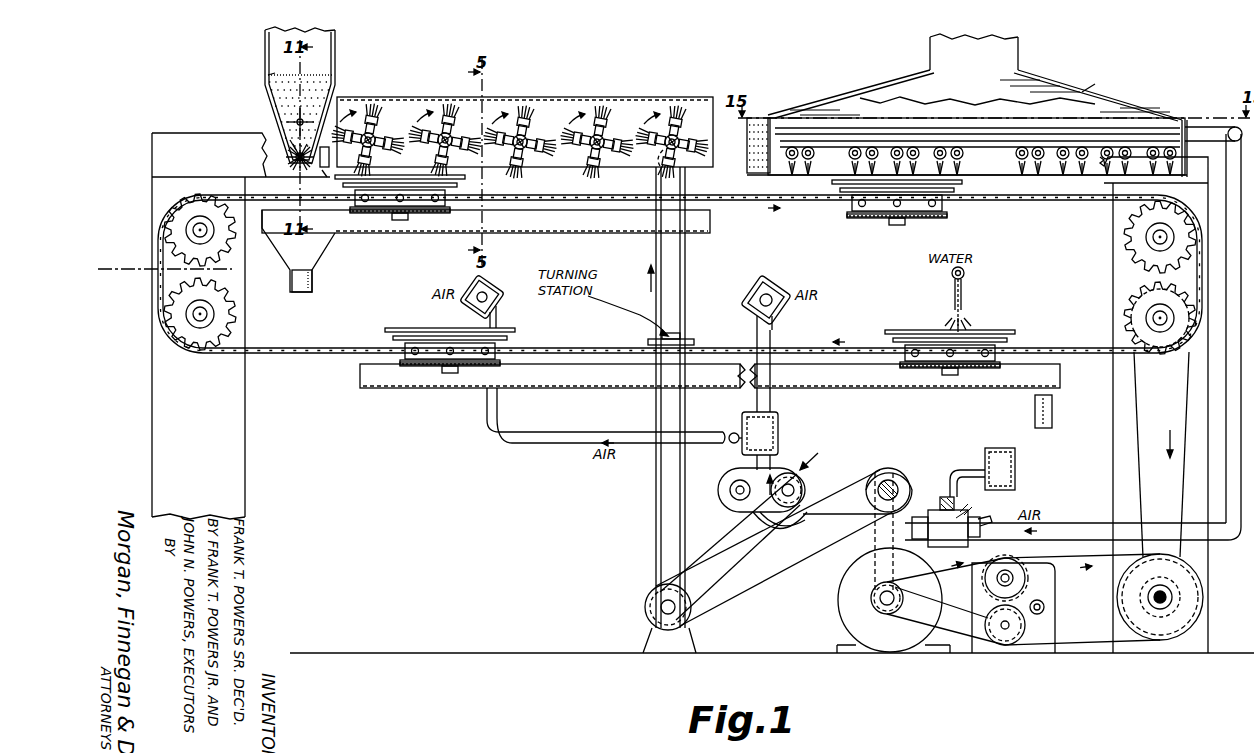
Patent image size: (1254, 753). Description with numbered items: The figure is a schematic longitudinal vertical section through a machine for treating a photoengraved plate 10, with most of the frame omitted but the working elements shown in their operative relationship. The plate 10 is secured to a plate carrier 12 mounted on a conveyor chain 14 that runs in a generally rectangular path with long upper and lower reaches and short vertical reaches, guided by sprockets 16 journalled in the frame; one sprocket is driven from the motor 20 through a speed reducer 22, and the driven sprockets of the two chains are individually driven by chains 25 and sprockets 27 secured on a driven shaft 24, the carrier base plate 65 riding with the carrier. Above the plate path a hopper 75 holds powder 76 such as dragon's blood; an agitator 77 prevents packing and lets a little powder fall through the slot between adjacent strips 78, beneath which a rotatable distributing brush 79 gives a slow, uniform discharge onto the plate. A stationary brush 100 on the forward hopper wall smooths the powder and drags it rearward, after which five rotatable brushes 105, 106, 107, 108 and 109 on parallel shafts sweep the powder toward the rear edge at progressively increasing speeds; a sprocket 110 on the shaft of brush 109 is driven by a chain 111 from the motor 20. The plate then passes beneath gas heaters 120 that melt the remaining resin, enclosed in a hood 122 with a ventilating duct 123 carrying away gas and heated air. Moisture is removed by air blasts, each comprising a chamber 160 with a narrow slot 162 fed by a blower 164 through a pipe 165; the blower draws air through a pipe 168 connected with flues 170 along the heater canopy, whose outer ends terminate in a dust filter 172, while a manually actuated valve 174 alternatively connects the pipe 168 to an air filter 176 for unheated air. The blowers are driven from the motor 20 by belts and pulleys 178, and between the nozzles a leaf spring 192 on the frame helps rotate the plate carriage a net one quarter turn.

The photoengraved plate 10 is at (142, 280).
The plate carrier 12 is at (382, 205).
The conveyor chain 14 is at (595, 345).
The sprockets 16 is at (170, 222).
The motor 20 is at (840, 601).
The speed reducer 22 is at (970, 660).
The driven shaft 24 is at (1166, 597).
The chains 25 is at (1138, 472).
The sprockets 27 is at (1196, 608).
The carrier base plate 65 is at (445, 208).
The hopper 75 is at (265, 42).
The powder 76 is at (276, 76).
The agitator 77 is at (296, 118).
The strips 78 is at (288, 138).
The rotatable distributing brush 79 is at (295, 157).
The stationary brush 100 is at (322, 172).
The rotatable brush 105 is at (378, 110).
The rotatable brush 106 is at (455, 110).
The rotatable brush 107 is at (530, 112).
The rotatable brush 108 is at (606, 112).
The rotatable brush 109 is at (682, 112).
The sprocket 110 is at (653, 165).
The chain 111 is at (685, 285).
The gas heaters 120 is at (1020, 160).
The hood 122 is at (888, 88).
The ventilating duct 123 is at (1019, 48).
The air blast chamber 160 is at (470, 283).
The narrow slot 162 is at (498, 314).
The blower 164 is at (738, 505).
The pipe 165 is at (488, 410).
The pipe 168 is at (1228, 387).
The flues 170 is at (1110, 130).
The dust filter 172 is at (755, 118).
The manually actuated valve 174 is at (945, 497).
The air filter 176 is at (1000, 447).
The belts and pulleys 178 is at (862, 472).
The leaf spring 192 is at (692, 333).